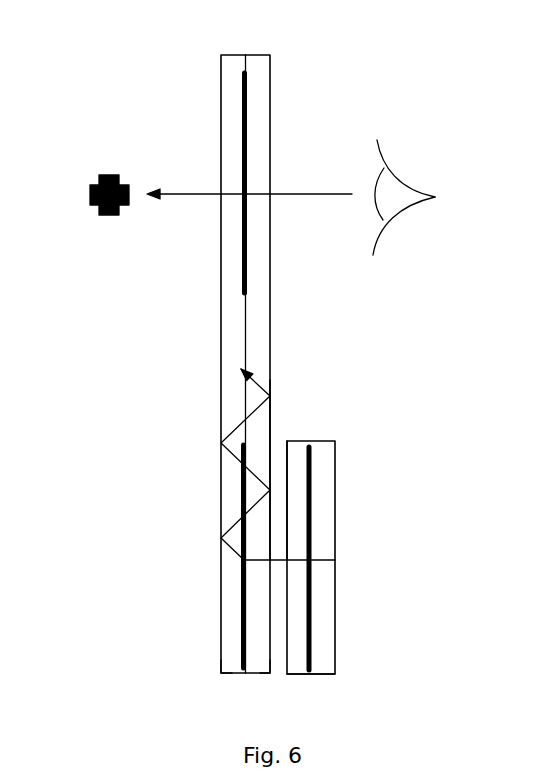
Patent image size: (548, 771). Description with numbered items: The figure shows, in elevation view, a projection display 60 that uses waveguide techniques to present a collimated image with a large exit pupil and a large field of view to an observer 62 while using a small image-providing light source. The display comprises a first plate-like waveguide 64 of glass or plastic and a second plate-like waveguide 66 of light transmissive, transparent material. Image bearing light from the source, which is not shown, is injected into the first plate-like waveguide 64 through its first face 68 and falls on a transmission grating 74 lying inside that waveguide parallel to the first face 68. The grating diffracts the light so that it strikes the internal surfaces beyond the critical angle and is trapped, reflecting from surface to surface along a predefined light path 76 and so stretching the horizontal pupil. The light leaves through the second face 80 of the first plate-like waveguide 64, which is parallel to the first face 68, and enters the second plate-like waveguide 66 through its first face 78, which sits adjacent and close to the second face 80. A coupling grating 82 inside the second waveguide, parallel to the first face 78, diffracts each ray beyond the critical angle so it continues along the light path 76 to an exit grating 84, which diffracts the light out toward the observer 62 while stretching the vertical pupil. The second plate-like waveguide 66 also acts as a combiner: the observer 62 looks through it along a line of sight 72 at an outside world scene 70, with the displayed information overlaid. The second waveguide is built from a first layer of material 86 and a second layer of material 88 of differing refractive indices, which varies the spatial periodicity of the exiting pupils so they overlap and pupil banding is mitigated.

The projection display 60 is at (323, 72).
The observer 62 is at (390, 203).
The first plate-like waveguide 64 is at (325, 517).
The second plate-like waveguide 66 is at (258, 312).
The first face 68 is at (335, 650).
The outside world scene 70 is at (106, 174).
The line of sight 72 is at (180, 197).
The transmission grating 74 is at (311, 602).
The light path 76 is at (232, 410).
The first face 78 is at (271, 457).
The second face 80 is at (285, 485).
The coupling grating 82 is at (243, 632).
The exit grating 84 is at (245, 121).
The first layer of material 86 is at (258, 672).
The second layer of material 88 is at (228, 660).